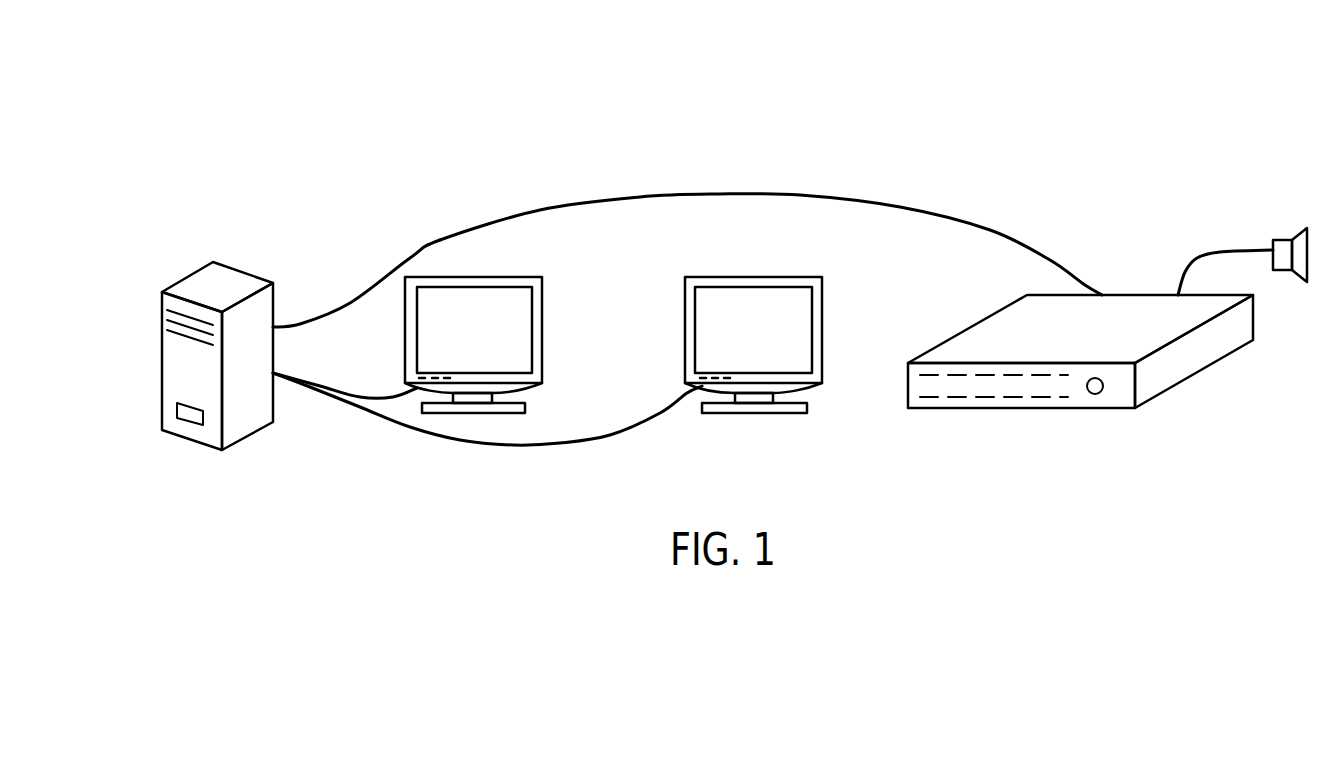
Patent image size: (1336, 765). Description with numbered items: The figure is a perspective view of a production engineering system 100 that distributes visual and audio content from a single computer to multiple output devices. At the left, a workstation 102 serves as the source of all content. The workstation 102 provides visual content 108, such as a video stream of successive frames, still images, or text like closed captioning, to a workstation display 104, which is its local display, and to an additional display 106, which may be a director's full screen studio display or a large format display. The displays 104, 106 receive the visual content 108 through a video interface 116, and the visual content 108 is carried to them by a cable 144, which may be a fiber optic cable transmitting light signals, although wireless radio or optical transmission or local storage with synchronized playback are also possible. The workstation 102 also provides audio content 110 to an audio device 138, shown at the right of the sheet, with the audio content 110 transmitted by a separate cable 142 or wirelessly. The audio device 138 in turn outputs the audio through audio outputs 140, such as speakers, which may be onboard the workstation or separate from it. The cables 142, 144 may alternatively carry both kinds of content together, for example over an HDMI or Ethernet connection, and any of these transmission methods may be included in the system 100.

The production engineering system 100 is at (893, 143).
The workstation 102 is at (222, 275).
The workstation display 104 is at (497, 277).
The additional display 106 is at (777, 277).
The visual content 108 is at (390, 383).
The audio content 110 is at (716, 178).
The video interface 116 is at (303, 278).
The audio device 138 is at (1112, 305).
The audio outputs 140 is at (1283, 242).
The cable 142 is at (540, 208).
The cable 144 is at (367, 400).